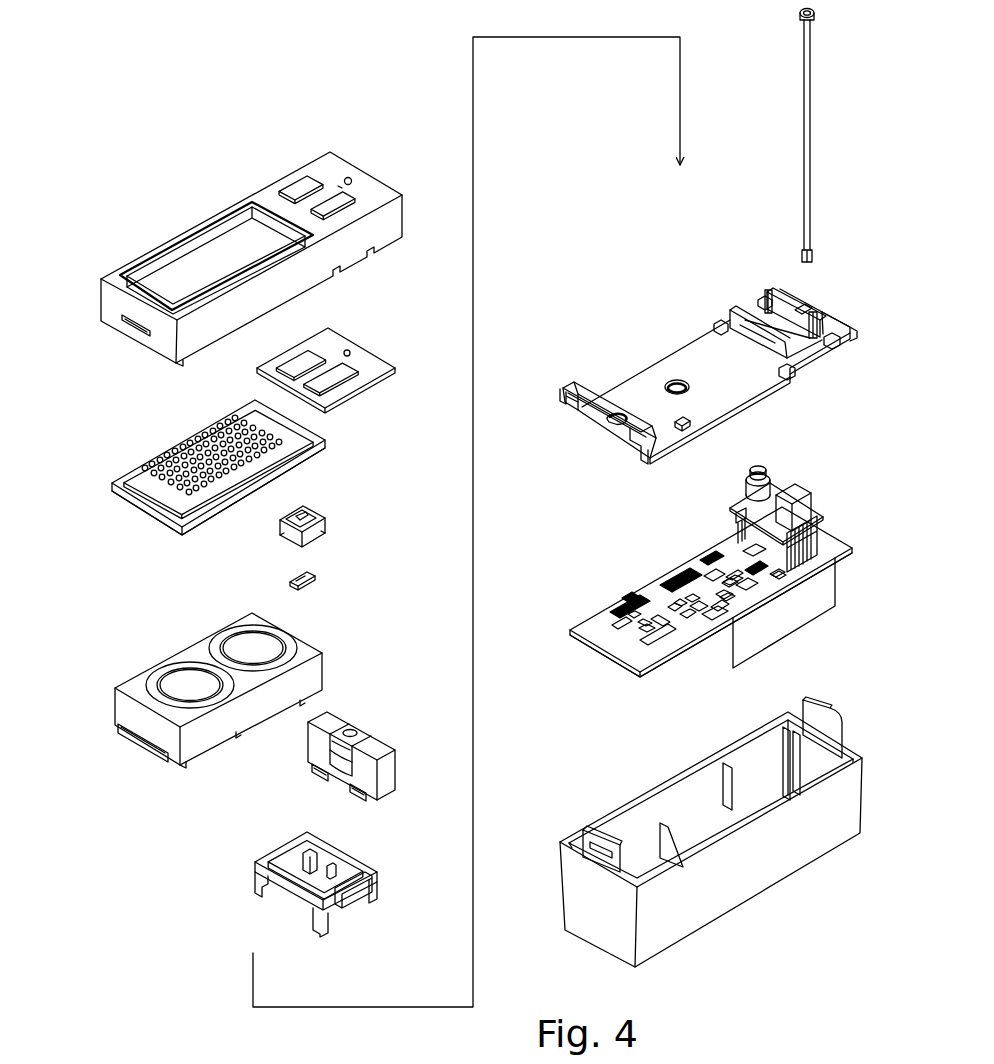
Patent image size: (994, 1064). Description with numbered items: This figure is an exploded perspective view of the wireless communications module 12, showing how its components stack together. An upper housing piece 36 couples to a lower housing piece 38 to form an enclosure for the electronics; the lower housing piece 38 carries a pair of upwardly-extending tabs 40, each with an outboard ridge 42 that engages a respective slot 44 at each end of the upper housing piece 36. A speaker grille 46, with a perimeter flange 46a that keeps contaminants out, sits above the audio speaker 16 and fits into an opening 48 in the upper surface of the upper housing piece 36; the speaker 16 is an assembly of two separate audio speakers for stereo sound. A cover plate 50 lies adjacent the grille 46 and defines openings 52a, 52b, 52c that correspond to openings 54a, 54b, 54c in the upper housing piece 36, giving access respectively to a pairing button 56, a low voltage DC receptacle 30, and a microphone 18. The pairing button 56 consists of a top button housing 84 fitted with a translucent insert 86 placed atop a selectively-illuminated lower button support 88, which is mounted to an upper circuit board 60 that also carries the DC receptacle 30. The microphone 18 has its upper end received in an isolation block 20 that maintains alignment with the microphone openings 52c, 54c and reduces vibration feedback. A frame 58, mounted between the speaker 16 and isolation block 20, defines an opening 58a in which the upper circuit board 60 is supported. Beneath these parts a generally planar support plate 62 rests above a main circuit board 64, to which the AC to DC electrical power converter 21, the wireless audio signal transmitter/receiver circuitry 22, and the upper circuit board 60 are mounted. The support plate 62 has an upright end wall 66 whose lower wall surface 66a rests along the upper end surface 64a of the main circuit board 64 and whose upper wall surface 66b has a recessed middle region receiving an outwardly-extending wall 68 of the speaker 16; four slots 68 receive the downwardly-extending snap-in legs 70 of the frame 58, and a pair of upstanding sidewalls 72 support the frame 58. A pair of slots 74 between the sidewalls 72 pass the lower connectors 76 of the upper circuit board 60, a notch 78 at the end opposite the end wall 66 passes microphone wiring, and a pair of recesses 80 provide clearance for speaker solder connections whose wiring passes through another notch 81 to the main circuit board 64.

The wireless communications module 12 is at (246, 47).
The audio speaker 16 is at (473, 532).
The microphone 18 is at (812, 148).
The isolation block 20 is at (380, 742).
The AC to DC electrical power converter 21 is at (735, 668).
The wireless audio signal transmitter/receiver circuitry 22 is at (648, 580).
The low voltage DC receptacle 30 is at (803, 490).
The upper housing piece 36 is at (272, 251).
The lower housing piece 38 is at (711, 822).
The upwardly-extending tabs 40 is at (717, 792).
The outboard ridge 42 is at (600, 853).
The slot 44 is at (135, 325).
The speaker grille 46 is at (206, 478).
The perimeter flange 46a is at (140, 510).
The opening 48 is at (205, 245).
The cover plate 50 is at (340, 358).
The opening 52a is at (305, 360).
The opening 52b is at (345, 380).
The opening 52c is at (348, 349).
The opening 54a is at (300, 185).
The opening 54b is at (348, 203).
The opening 54c is at (349, 174).
The pairing button 56 is at (303, 550).
The frame 58 is at (295, 895).
The opening 58a is at (338, 858).
The upper circuit board 60 is at (774, 509).
The support plate 62 is at (688, 369).
The main circuit board 64 is at (713, 567).
The upper end surface 64a is at (631, 660).
The upright end wall 66 is at (576, 412).
The lower wall surface 66a is at (601, 442).
The upper wall surface 66b is at (596, 402).
The slots 68 is at (135, 745).
The snap-in legs 70 is at (258, 898).
The upstanding sidewalls 72 is at (775, 317).
The slots 74 is at (755, 300).
The lower connectors 76 is at (737, 530).
The notch 78 is at (832, 300).
The recesses 80 is at (681, 381).
The notch 81 is at (686, 433).
The top button housing 84 is at (320, 517).
The translucent insert 86 is at (312, 578).
The lower button support 88 is at (766, 478).